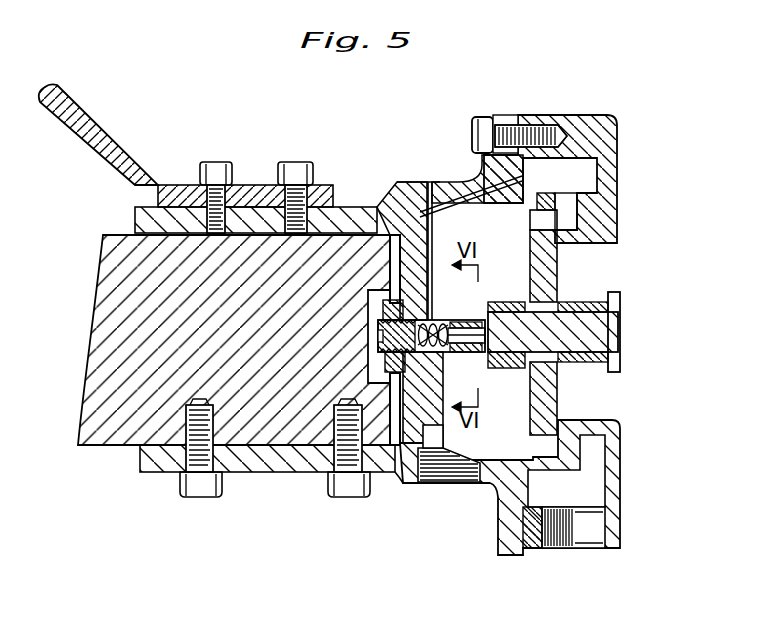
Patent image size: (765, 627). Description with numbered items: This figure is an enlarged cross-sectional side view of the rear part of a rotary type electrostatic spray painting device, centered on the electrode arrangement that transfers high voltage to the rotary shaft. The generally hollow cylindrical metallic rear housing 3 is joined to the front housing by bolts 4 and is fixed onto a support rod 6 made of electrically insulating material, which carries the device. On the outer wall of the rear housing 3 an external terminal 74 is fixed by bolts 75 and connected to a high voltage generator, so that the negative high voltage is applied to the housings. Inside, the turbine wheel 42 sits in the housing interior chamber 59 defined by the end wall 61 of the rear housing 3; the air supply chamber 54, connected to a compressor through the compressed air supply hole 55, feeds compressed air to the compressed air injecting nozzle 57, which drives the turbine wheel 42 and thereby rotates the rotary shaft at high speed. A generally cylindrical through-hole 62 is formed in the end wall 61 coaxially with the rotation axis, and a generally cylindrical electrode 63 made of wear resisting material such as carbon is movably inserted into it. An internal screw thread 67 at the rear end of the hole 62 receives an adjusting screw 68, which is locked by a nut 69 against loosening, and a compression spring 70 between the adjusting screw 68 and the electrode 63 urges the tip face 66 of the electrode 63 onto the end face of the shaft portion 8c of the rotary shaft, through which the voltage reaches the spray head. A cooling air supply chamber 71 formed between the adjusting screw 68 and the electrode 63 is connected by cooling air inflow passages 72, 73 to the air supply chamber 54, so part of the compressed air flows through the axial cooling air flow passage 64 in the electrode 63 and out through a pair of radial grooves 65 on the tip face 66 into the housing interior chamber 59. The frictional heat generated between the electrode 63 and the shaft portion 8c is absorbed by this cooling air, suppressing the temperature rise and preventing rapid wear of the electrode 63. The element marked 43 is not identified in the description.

The rear housing 3 is at (410, 182).
The bolts 4 is at (483, 123).
The support rod 6 is at (113, 433).
The shaft portion 8c is at (580, 306).
The turbine wheel 42 is at (560, 393).
The nut 43 is at (510, 302).
The air supply chamber 54 is at (565, 218).
The compressed air supply hole 55 is at (590, 530).
The compressed air injecting nozzle 57 is at (585, 187).
The housing interior chamber 59 is at (503, 217).
The end wall 61 is at (450, 418).
The through-hole 62 is at (463, 320).
The electrode 63 is at (480, 328).
The cooling air flow passage 64 is at (466, 354).
The grooves 65 is at (486, 360).
The tip face 66 is at (514, 358).
The internal screw thread 67 is at (392, 468).
The adjusting screw 68 is at (380, 345).
The nut 69 is at (393, 370).
The compression spring 70 is at (485, 208).
The cooling air supply chamber 71 is at (428, 270).
The cooling air inflow passage 72 is at (398, 205).
The cooling air inflow passage 73 is at (462, 185).
The external terminal 74 is at (126, 162).
The bolts 75 is at (222, 162).